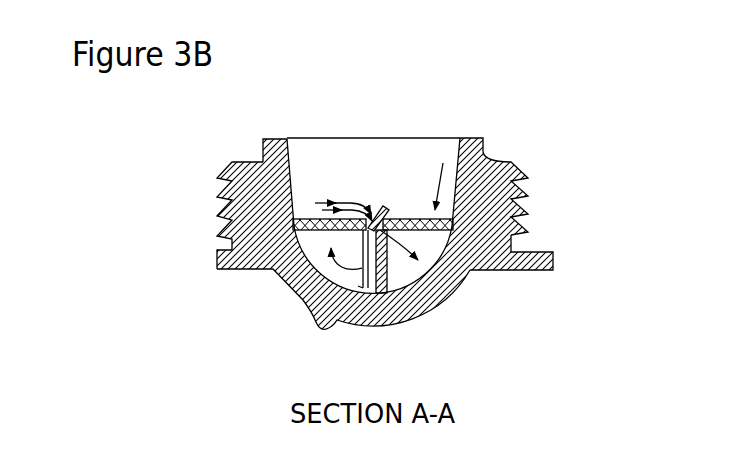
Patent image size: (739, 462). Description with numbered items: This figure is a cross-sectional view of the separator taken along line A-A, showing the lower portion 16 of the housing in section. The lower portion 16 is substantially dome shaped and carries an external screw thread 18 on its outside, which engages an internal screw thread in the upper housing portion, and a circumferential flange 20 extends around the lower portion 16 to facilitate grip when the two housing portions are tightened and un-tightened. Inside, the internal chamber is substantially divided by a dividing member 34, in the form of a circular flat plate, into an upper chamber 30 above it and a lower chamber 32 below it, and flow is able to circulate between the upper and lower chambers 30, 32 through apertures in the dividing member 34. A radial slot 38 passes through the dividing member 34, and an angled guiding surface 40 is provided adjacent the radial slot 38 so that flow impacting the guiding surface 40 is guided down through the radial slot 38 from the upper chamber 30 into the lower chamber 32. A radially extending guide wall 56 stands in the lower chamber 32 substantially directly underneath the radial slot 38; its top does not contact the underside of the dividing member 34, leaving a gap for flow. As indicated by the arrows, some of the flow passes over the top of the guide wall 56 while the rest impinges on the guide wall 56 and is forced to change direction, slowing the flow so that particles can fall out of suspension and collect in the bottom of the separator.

The lower portion 16 is at (255, 152).
The external screw thread 18 is at (218, 205).
The circumferential flange 20 is at (558, 253).
The upper chamber 30 is at (429, 152).
The lower chamber 32 is at (437, 265).
The dividing member 34 is at (486, 152).
The radial slot 38 is at (373, 208).
The angled guiding surface 40 is at (384, 212).
The guide wall 56 is at (382, 292).